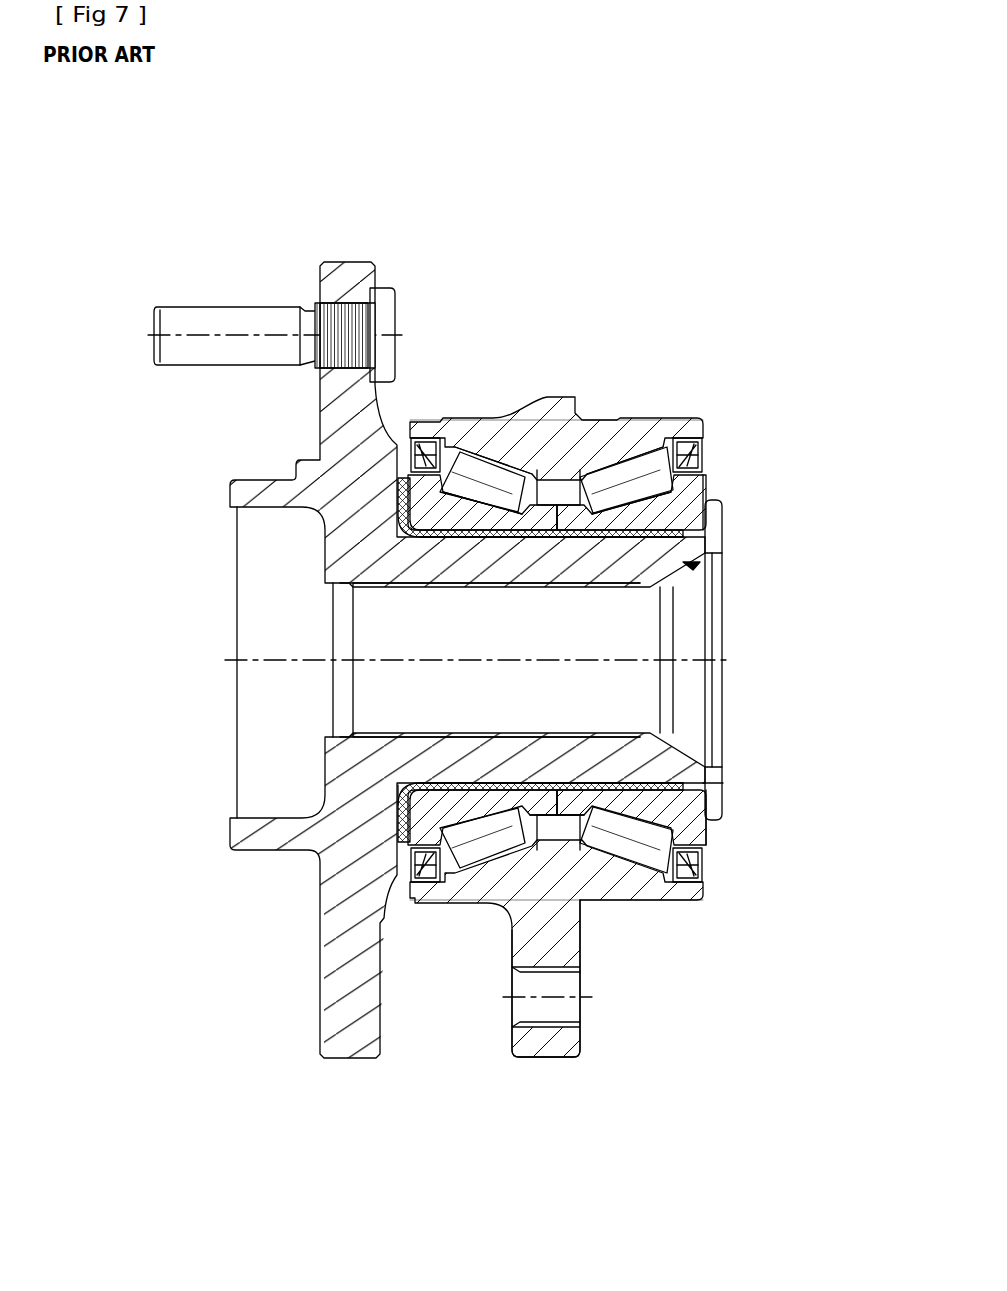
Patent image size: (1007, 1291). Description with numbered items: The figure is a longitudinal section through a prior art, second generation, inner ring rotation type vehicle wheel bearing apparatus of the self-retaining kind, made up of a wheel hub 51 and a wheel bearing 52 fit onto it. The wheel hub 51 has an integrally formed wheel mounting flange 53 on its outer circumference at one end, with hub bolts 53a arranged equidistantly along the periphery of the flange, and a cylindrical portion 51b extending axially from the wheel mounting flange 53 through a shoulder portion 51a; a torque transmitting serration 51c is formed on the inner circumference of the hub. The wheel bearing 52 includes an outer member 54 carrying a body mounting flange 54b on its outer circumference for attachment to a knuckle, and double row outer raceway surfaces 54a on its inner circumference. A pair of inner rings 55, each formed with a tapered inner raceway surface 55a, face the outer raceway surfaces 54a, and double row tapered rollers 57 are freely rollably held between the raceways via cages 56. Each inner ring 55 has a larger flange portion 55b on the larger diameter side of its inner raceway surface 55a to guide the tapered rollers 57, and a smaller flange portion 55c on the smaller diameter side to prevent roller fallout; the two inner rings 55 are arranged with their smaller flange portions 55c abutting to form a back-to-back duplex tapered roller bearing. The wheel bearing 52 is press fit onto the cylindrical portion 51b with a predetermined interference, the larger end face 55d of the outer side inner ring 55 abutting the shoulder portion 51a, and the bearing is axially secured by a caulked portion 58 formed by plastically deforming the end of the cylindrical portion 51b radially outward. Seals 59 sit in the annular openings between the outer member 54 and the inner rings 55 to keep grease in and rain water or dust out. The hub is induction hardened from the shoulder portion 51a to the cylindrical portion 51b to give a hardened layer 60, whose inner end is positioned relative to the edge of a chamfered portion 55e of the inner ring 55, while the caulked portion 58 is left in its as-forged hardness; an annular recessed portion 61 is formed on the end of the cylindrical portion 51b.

The wheel hub 51 is at (484, 660).
The shoulder portion 51a is at (462, 800).
The cylindrical portion 51b is at (638, 532).
The torque transmitting serration 51c is at (387, 583).
The wheel bearing 52 is at (600, 370).
The wheel mounting flange 53 is at (274, 287).
The hub bolt 53a is at (220, 318).
The outer member 54 is at (556, 714).
The outer raceway surface 54a is at (460, 445).
The body mounting flange 54b is at (535, 1047).
The inner ring 55 is at (490, 649).
The inner raceway surface 55a is at (488, 506).
The larger flange portion 55b is at (433, 480).
The smaller flange portion 55c is at (575, 523).
The larger end face 55d is at (406, 810).
The chamfered portion 55e is at (723, 783).
The cage 56 is at (580, 800).
The tapered roller 57 is at (553, 917).
The caulked portion 58 is at (708, 540).
The seal 59 is at (415, 452).
The hardened layer 60 is at (412, 540).
The annular recessed portion 61 is at (700, 565).